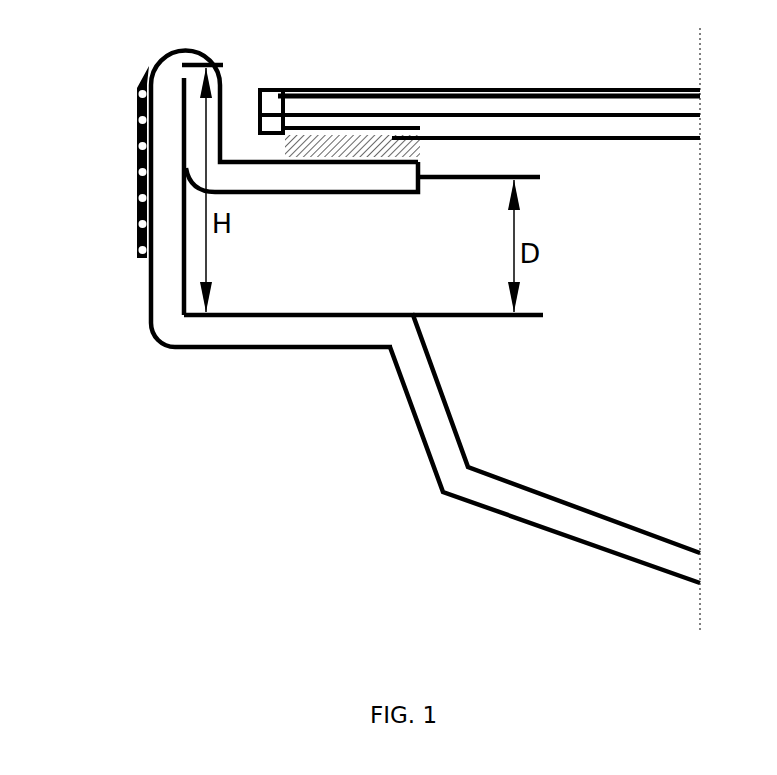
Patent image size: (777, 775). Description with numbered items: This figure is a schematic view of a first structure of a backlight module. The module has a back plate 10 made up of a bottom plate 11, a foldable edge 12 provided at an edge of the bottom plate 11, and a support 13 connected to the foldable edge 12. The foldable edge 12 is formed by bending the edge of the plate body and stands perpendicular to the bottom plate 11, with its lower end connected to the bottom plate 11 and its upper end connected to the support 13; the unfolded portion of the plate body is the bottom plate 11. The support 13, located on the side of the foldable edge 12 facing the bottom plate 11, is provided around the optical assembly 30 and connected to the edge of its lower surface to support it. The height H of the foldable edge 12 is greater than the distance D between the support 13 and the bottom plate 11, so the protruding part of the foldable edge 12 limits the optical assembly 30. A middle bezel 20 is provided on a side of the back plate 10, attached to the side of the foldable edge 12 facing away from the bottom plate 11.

The back plate 10 is at (185, 441).
The bottom plate 11 is at (300, 365).
The foldable edge 12 is at (176, 288).
The support 13 is at (251, 208).
The middle bezel 20 is at (108, 292).
The optical assembly 30 is at (530, 72).